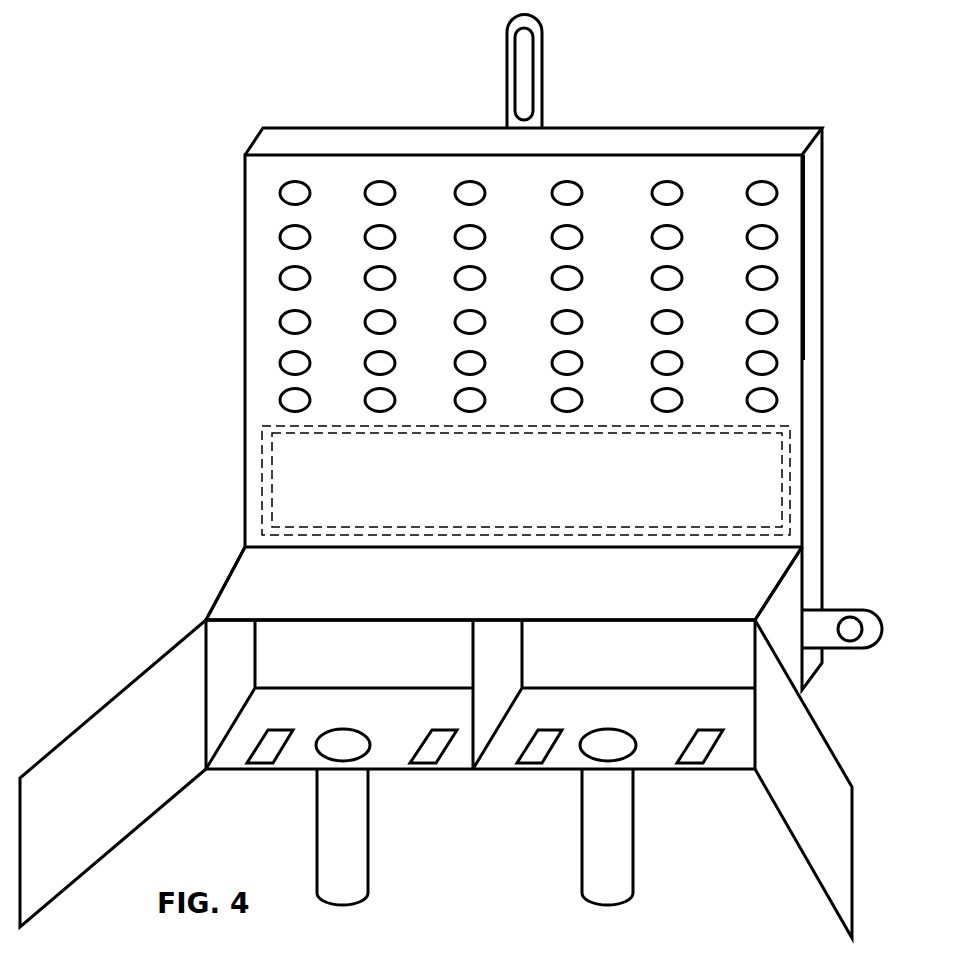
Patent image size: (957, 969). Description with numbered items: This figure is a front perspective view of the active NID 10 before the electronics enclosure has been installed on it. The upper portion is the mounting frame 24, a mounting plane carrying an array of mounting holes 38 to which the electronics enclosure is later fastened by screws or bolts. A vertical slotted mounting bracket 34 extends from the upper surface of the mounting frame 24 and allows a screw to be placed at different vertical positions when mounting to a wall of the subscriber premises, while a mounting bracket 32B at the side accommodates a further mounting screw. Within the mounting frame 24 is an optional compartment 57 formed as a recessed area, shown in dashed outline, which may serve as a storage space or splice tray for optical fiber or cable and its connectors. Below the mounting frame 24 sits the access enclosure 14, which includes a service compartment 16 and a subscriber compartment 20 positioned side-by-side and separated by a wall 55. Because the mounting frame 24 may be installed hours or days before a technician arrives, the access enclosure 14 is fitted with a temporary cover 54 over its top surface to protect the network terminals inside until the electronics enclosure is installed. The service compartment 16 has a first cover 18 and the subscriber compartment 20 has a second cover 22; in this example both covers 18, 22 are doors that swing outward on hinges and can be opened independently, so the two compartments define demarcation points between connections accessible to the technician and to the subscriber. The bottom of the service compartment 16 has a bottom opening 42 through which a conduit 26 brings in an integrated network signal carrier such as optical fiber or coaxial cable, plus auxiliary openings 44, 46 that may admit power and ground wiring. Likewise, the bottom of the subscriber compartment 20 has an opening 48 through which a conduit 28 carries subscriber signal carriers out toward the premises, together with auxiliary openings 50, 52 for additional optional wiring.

The active NID 10 is at (141, 361).
The access enclosure 14 is at (245, 546).
The service compartment 16 is at (230, 655).
The first cover 18 is at (68, 860).
The subscriber compartment 20 is at (790, 663).
The second cover 22 is at (805, 858).
The mounting frame 24 is at (245, 283).
The conduit 26 is at (345, 845).
The conduit 28 is at (605, 845).
The mounting bracket 32B is at (843, 608).
The vertical slotted mounting bracket 34 is at (543, 78).
The mounting holes 38 is at (750, 398).
The bottom opening 42 is at (330, 748).
The auxiliary opening 44 is at (262, 760).
The auxiliary opening 46 is at (425, 765).
The opening 48 is at (596, 745).
The auxiliary opening 50 is at (530, 768).
The auxiliary opening 52 is at (700, 762).
The temporary cover 54 is at (258, 576).
The wall 55 is at (490, 650).
The compartment 57 is at (280, 487).